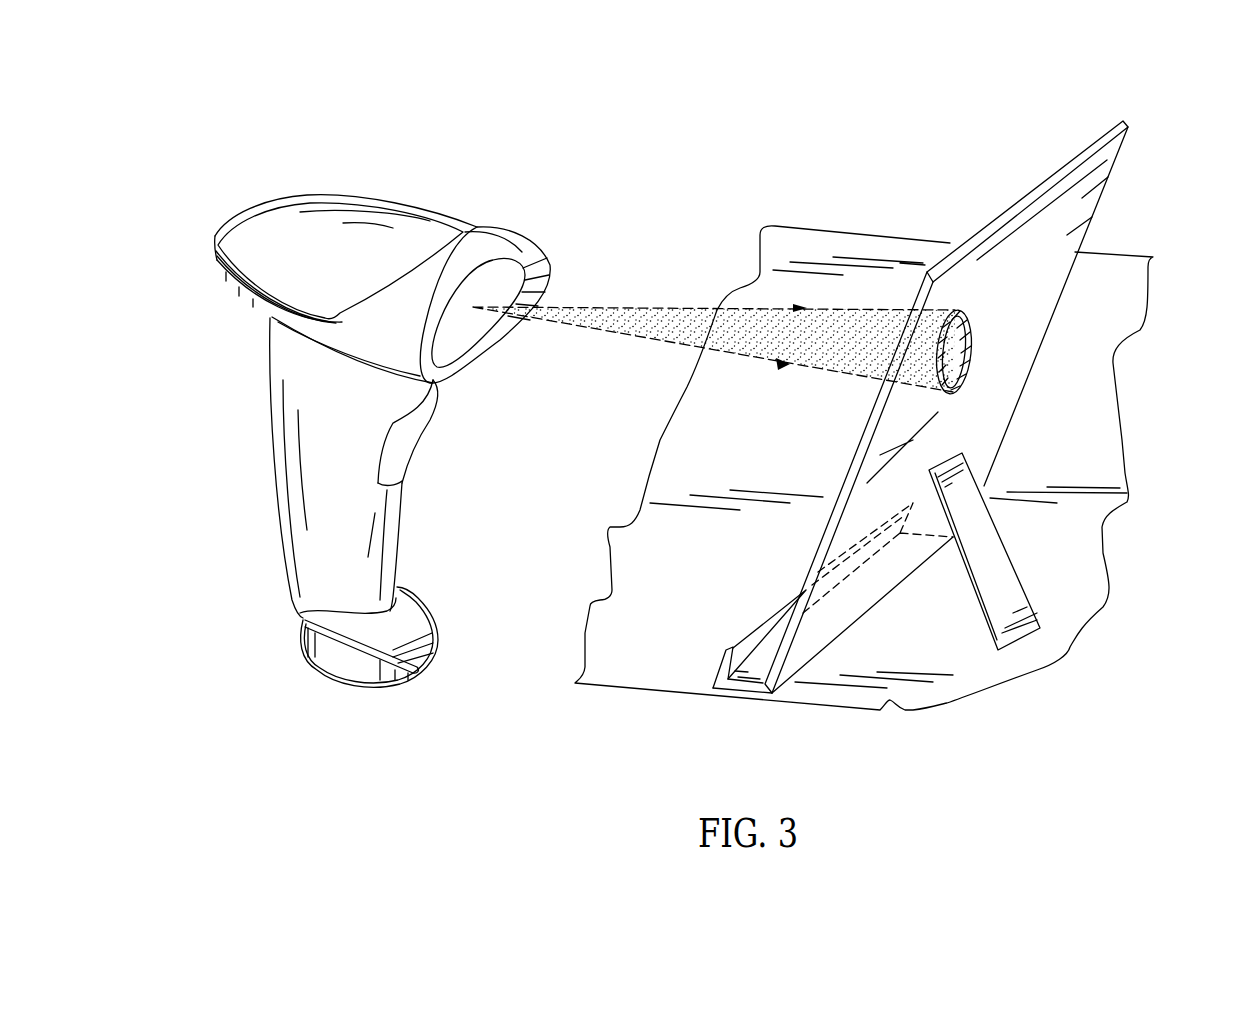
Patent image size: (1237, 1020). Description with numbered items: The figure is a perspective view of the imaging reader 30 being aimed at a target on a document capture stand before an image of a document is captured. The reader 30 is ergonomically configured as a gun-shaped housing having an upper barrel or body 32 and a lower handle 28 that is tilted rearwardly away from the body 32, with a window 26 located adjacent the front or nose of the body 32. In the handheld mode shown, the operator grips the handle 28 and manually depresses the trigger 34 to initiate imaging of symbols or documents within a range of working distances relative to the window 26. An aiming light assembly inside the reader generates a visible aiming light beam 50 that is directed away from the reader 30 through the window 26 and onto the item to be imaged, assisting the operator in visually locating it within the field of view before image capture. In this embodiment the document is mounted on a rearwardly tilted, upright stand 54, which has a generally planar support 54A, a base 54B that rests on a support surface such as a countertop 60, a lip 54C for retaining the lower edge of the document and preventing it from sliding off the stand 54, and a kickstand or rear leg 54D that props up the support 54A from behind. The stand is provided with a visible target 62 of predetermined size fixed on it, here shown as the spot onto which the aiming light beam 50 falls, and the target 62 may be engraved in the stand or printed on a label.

The imaging reader 30 is at (293, 153).
The body 32 is at (375, 208).
The window 26 is at (513, 278).
The handle 28 is at (275, 523).
The trigger 34 is at (403, 450).
The aiming light beam 50 is at (668, 307).
The upright stand 54 is at (1096, 110).
The support 54A is at (1055, 278).
The base 54B is at (752, 680).
The lip 54C is at (745, 642).
The rear leg 54D is at (1025, 618).
The countertop 60 is at (650, 678).
The target 62 is at (972, 342).